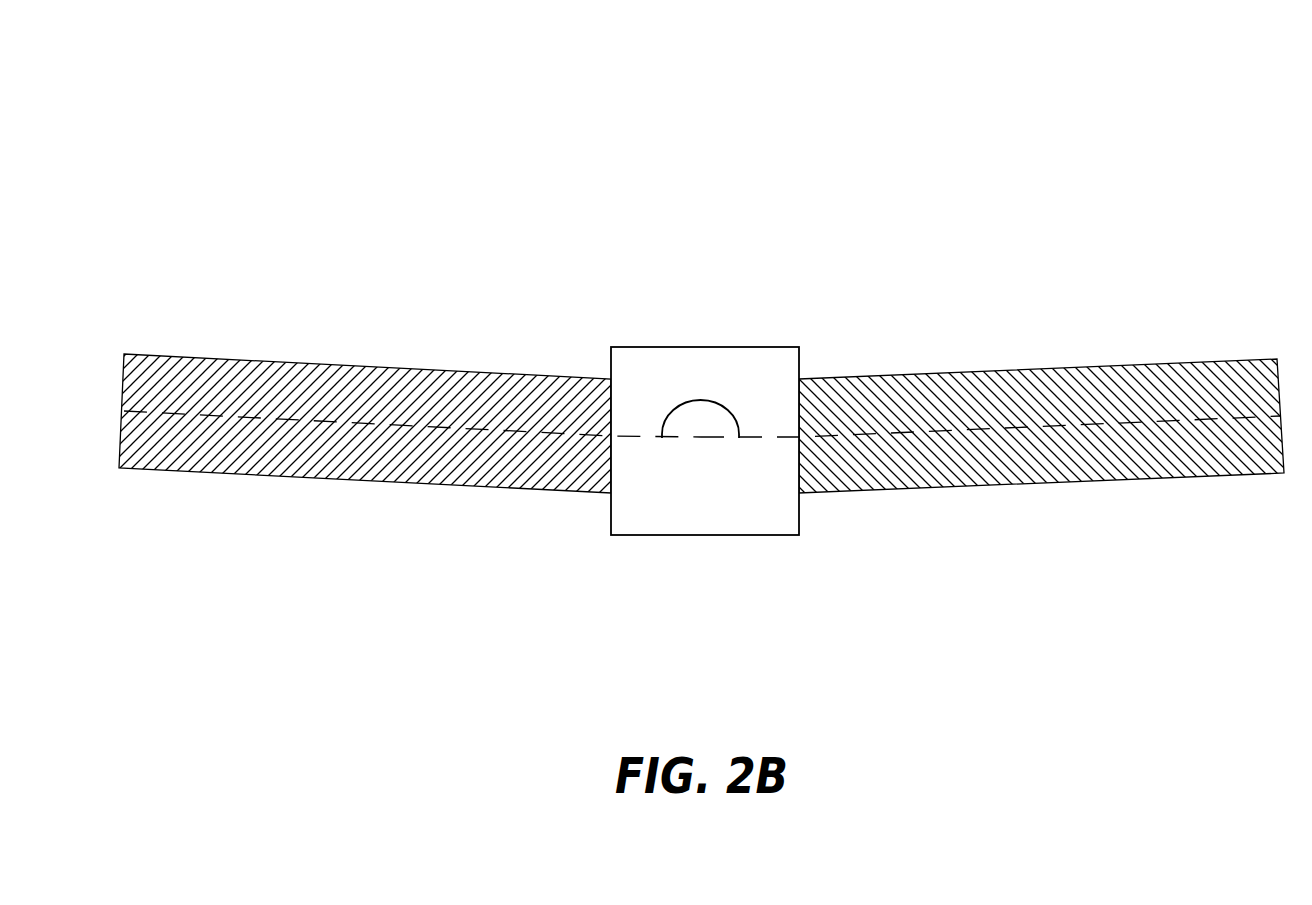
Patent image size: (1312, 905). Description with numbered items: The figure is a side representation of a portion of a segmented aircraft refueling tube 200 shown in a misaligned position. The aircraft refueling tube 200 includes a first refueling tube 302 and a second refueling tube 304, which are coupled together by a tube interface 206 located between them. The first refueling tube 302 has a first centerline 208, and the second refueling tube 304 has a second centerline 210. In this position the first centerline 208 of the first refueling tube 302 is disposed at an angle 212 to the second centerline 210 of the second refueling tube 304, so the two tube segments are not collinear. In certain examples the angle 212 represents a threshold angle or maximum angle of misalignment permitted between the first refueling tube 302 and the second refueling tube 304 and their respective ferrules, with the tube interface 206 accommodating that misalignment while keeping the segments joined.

The aircraft refueling tube 200 is at (266, 121).
The tube interface 206 is at (677, 347).
The first centerline 208 is at (392, 430).
The second centerline 210 is at (1013, 427).
The angle 212 is at (703, 403).
The first refueling tube 302 is at (408, 367).
The second refueling tube 304 is at (985, 373).